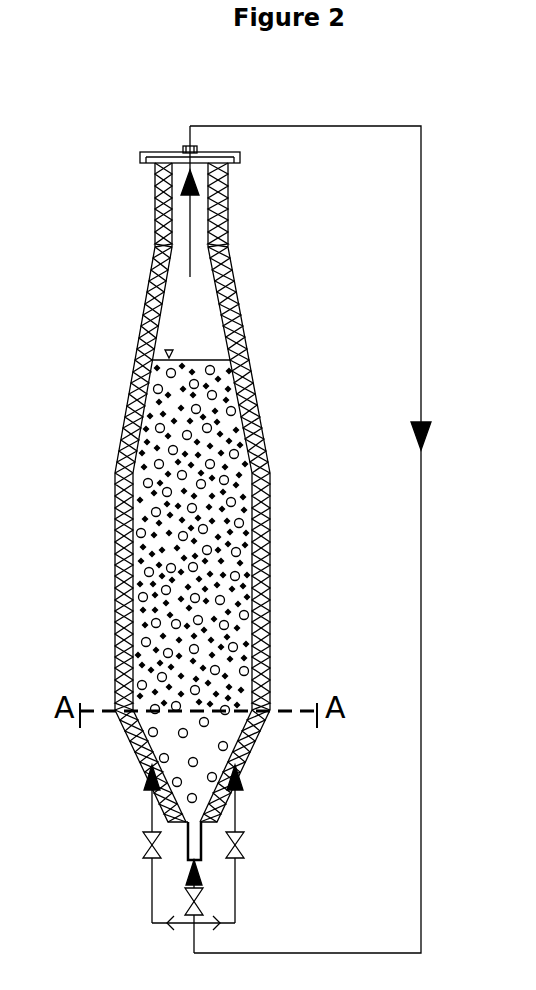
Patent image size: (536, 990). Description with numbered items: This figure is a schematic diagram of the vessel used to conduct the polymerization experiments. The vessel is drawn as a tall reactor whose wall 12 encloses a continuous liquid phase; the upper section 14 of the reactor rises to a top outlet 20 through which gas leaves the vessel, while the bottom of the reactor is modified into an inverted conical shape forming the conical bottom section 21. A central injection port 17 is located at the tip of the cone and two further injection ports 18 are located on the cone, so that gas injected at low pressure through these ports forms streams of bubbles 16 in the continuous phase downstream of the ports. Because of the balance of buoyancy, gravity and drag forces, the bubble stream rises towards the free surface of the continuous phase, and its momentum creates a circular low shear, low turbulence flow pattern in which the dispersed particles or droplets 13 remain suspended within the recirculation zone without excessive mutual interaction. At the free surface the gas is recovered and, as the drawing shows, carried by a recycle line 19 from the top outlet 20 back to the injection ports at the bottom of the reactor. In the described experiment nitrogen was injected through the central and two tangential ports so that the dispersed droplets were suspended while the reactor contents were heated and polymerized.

The reactor vessel wall 12 is at (240, 492).
The solid catalyst particles 13 is at (246, 536).
The upper disengagement section 14 is at (233, 318).
The gas bubbles 16 is at (247, 584).
The bottom feed inlet 17 is at (213, 887).
The side inlet lines 18 is at (203, 847).
The gas recycle line 19 is at (360, 539).
The top gas outlet 20 is at (175, 147).
The conical bottom section 21 is at (240, 766).